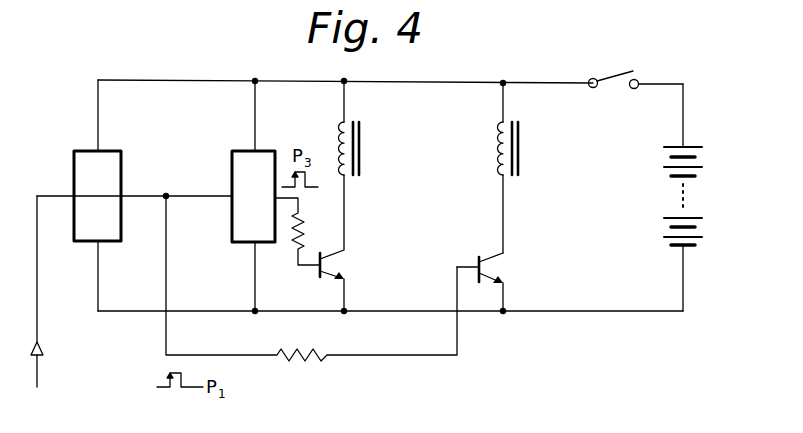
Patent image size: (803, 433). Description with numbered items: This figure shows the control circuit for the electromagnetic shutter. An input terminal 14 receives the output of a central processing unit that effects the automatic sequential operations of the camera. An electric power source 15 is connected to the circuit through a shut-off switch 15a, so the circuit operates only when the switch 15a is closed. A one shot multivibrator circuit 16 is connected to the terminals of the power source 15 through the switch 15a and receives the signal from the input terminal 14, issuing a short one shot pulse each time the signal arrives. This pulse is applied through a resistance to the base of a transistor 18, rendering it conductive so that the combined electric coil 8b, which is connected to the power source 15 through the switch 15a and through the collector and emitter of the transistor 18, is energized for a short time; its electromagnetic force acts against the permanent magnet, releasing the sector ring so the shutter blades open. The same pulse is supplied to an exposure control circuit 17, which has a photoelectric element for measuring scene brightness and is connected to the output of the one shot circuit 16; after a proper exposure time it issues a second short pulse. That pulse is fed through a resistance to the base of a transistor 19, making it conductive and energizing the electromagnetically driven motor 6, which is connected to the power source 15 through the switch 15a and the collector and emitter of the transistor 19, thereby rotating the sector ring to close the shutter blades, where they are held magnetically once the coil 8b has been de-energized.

The one shot multivibrator circuit 16 is at (74, 170).
The exposure control circuit 17 is at (232, 172).
The electromagnetically driven motor 6 is at (362, 157).
The combined electric coil 8b is at (521, 157).
The transistor 18 is at (486, 256).
The transistor 19 is at (340, 264).
The input terminal 14 is at (46, 348).
The electric power source 15 is at (664, 181).
The shut-off switch 15a is at (621, 89).